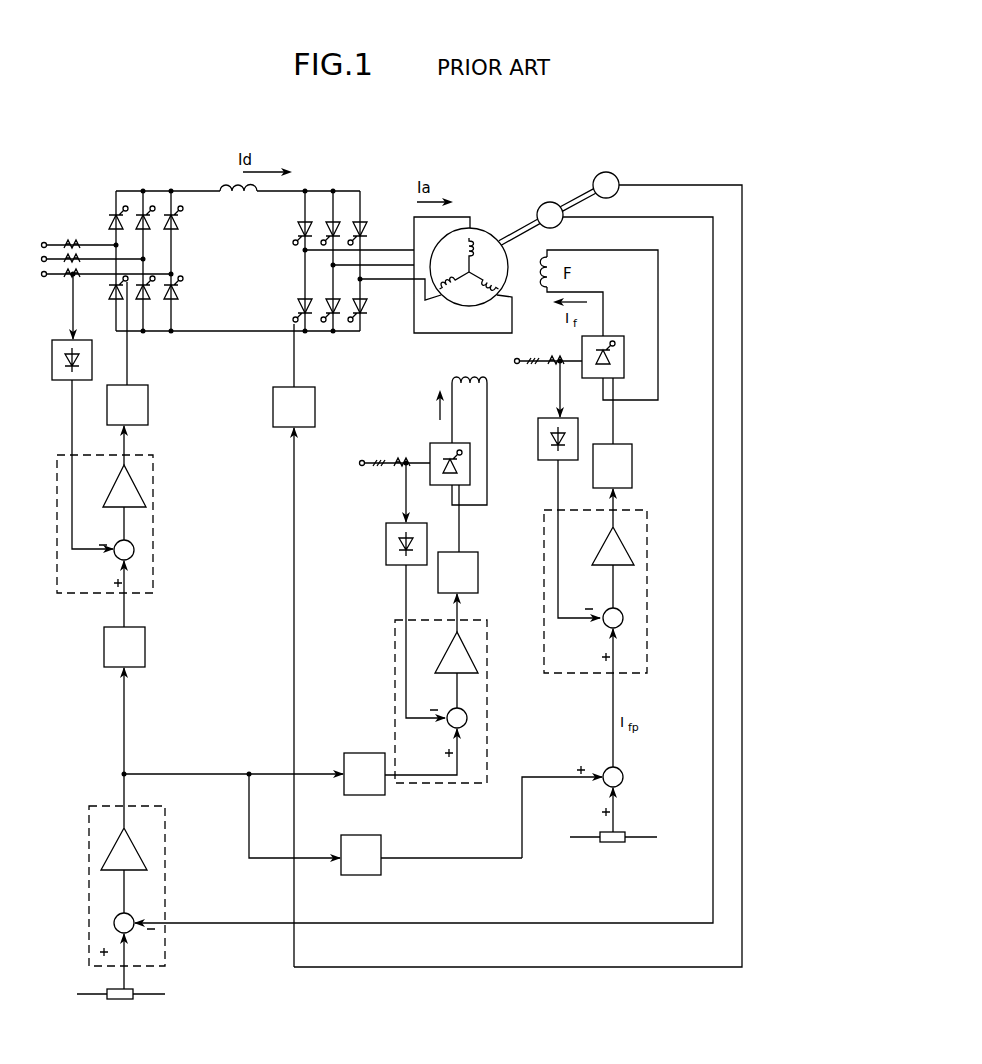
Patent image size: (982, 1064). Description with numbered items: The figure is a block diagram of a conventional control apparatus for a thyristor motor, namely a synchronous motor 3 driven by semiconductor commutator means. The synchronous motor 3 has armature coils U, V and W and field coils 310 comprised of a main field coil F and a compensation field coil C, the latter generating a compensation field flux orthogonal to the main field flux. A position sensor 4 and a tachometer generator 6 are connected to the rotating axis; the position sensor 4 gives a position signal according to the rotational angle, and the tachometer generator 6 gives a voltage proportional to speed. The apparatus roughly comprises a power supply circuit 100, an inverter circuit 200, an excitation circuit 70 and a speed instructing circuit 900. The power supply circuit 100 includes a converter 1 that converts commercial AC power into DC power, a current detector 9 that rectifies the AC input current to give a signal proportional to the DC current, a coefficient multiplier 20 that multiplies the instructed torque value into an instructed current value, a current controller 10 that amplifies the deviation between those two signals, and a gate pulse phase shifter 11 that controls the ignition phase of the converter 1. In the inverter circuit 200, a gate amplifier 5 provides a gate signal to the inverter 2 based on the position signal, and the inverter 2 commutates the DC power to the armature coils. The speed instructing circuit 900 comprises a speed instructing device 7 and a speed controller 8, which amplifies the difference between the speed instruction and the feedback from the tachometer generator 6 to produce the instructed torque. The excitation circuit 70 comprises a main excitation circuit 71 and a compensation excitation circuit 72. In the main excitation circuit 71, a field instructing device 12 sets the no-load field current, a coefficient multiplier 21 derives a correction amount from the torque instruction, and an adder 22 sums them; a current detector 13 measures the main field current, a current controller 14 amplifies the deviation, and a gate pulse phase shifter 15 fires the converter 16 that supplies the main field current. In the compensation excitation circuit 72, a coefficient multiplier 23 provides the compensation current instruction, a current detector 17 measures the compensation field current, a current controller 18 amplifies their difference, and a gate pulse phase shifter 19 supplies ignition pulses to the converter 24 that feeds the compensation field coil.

The converter 1 is at (186, 244).
The inverter 2 is at (282, 266).
The synchronous motor 3 is at (509, 226).
The position sensor 4 is at (615, 175).
The gate amplifier 5 is at (315, 388).
The tachometer generator 6 is at (559, 202).
The speed instructing device 7 is at (120, 1000).
The speed controller 8 is at (165, 807).
The current detector 9 is at (52, 381).
The current controller 10 is at (153, 456).
The gate pulse phase shifter 11 is at (148, 386).
The field instructing device 12 is at (614, 842).
The current detector 13 is at (538, 462).
The current controller 14 is at (648, 511).
The gate pulse phase shifter 15 is at (632, 445).
The converter 16 is at (625, 334).
The current detector 17 is at (386, 540).
The current controller 18 is at (487, 620).
The gate pulse phase shifter 19 is at (482, 551).
The coefficient multiplier 20 is at (145, 628).
The coefficient multiplier 21 is at (382, 874).
The adder 22 is at (623, 772).
The coefficient multiplier 23 is at (368, 753).
The converter 24 is at (468, 438).
The excitation circuit 70 is at (512, 891).
The main excitation circuit 71 is at (590, 703).
The compensation excitation circuit 72 is at (373, 608).
The power supply circuit 100 is at (107, 179).
The inverter circuit 200 is at (360, 176).
The field coils 310 is at (478, 368).
The speed instructing circuit 900 is at (218, 977).